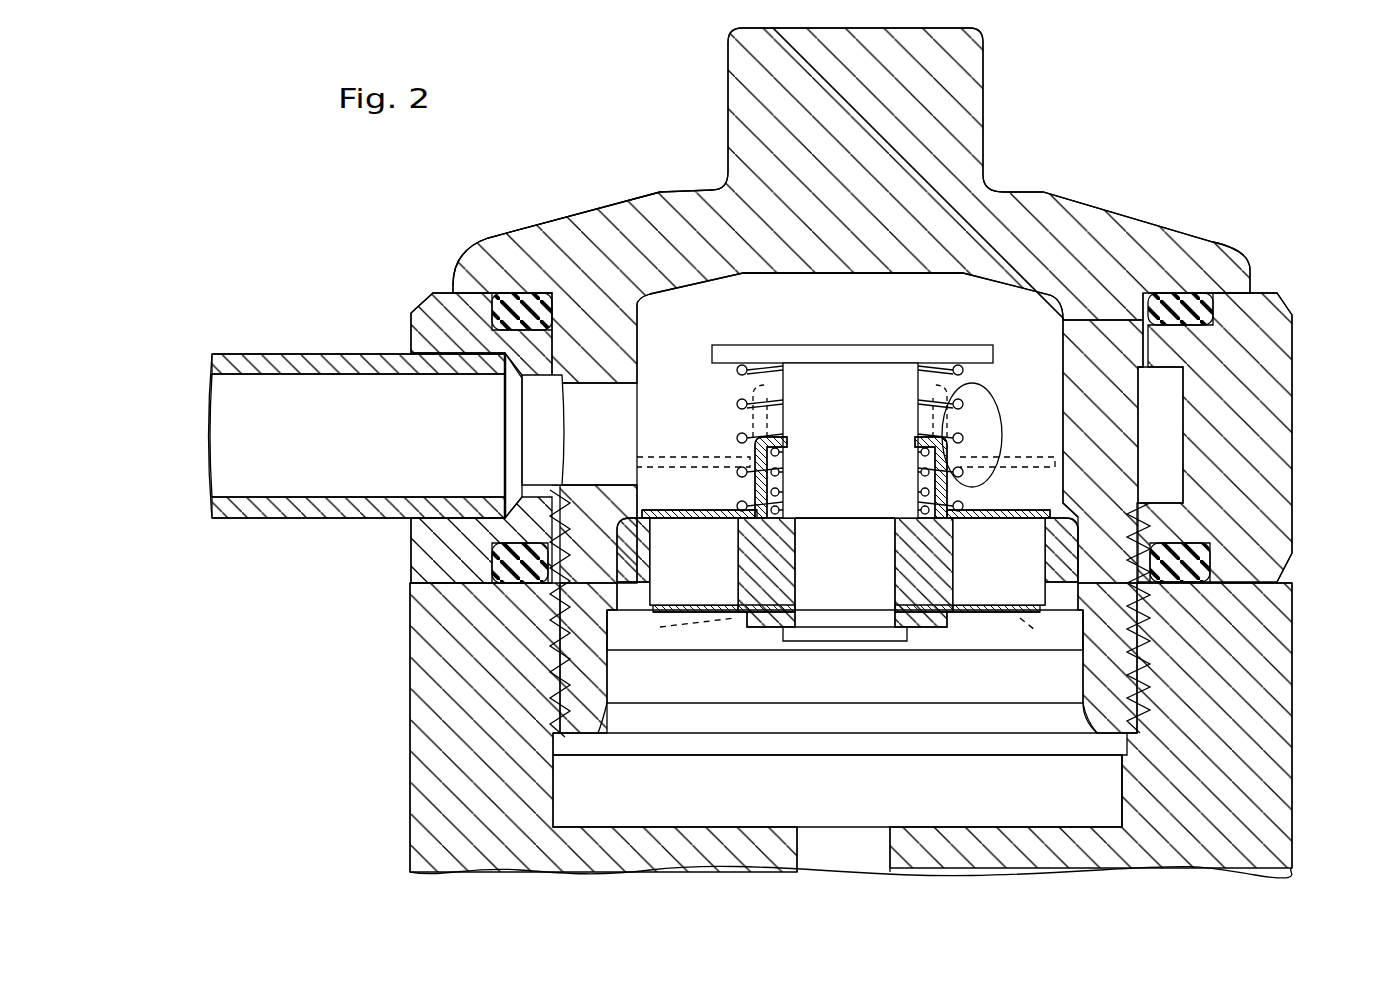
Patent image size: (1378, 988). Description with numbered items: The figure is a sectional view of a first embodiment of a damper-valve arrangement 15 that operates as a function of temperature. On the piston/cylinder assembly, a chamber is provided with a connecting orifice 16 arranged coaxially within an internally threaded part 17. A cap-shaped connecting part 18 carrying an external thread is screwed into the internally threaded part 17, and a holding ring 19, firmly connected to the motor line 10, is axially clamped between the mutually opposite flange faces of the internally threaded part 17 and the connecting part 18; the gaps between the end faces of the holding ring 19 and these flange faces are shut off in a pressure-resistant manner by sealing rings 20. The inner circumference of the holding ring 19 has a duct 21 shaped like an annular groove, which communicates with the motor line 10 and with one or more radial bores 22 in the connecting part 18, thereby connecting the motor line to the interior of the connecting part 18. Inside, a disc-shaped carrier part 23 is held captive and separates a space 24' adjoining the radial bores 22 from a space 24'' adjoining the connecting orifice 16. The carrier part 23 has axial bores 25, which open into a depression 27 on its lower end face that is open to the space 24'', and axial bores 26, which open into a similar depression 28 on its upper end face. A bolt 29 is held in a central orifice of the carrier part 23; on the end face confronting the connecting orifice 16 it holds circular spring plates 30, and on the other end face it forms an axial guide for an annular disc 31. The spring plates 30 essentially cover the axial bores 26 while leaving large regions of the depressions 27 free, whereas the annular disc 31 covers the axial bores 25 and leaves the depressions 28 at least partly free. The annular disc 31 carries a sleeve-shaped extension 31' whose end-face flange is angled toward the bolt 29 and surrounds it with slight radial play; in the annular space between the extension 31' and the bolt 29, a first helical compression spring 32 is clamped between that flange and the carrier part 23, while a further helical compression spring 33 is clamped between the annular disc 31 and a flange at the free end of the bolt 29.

The motor line 10 is at (340, 354).
The damper-valve arrangement 15 is at (439, 249).
The connecting orifice 16 is at (848, 850).
The internally threaded part 17 is at (432, 693).
The connecting part 18 is at (1025, 200).
The holding ring 19 is at (1258, 350).
The sealing rings 20 is at (1178, 300).
The duct 21 is at (1180, 455).
The radial bores 22 is at (597, 400).
The carrier part 23 is at (905, 578).
The space 24' is at (853, 297).
The space 24'' is at (837, 791).
The axial bores 25 is at (707, 570).
The axial bores 26 is at (1002, 570).
The depression 27 is at (658, 565).
The depression 28 is at (1028, 582).
The bolt 29 is at (877, 395).
The spring plates 30 is at (1010, 610).
The annular disc 31 is at (846, 495).
The sleeve-shaped extension 31' is at (806, 451).
The first helical compression spring 32 is at (920, 472).
The further helical compression spring 33 is at (740, 405).